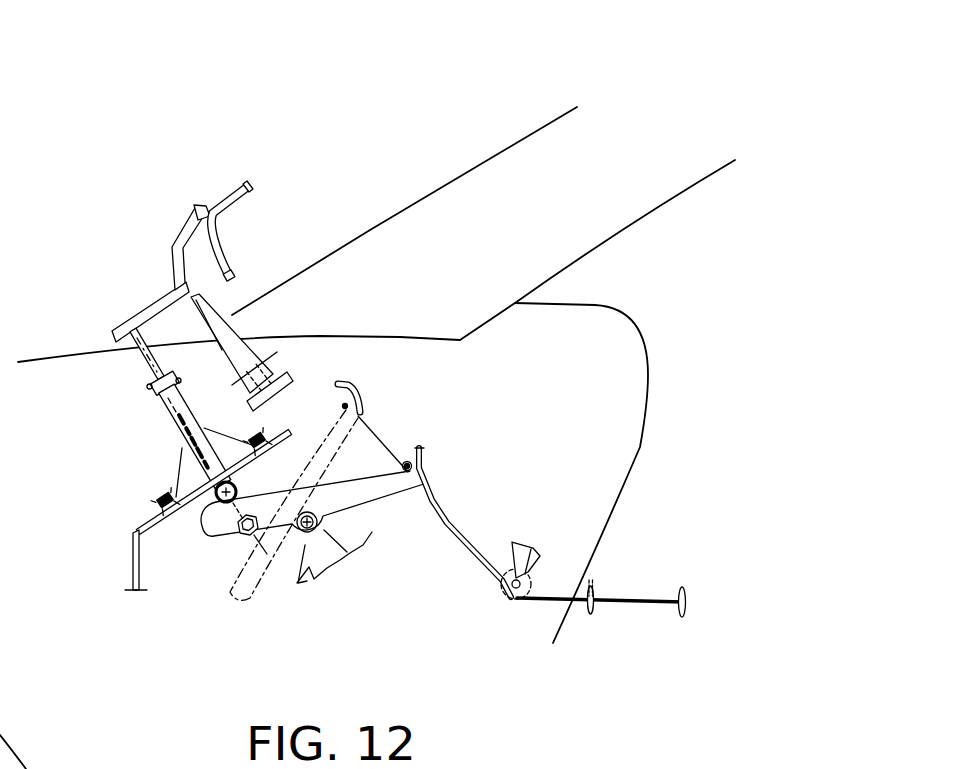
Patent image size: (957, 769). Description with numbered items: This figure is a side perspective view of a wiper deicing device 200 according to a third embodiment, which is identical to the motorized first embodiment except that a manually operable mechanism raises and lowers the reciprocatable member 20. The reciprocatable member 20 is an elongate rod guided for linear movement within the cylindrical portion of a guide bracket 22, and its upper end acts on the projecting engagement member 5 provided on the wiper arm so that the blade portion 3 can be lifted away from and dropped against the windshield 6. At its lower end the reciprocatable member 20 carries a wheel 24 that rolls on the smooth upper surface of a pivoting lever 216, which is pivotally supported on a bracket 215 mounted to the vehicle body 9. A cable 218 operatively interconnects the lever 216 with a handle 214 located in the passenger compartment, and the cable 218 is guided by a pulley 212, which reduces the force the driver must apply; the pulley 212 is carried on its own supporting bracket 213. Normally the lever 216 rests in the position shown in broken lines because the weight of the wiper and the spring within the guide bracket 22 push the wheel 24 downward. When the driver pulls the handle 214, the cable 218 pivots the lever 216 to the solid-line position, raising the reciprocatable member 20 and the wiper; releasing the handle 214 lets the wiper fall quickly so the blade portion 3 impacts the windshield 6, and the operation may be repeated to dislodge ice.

The wiper deicing device 200 is at (435, 146).
The blade portion 3 is at (225, 213).
The projecting engagement member 5 is at (143, 307).
The windshield 6 is at (595, 227).
The vehicle body 9 is at (130, 560).
The reciprocatable member 20 is at (142, 358).
The guide bracket 22 is at (170, 416).
The wheel 24 is at (205, 495).
The pulley 212 is at (512, 570).
The bracket 213 is at (536, 556).
The handle 214 is at (686, 607).
The bracket 215 is at (300, 537).
The pivoting lever 216 is at (350, 497).
The cable 218 is at (440, 500).